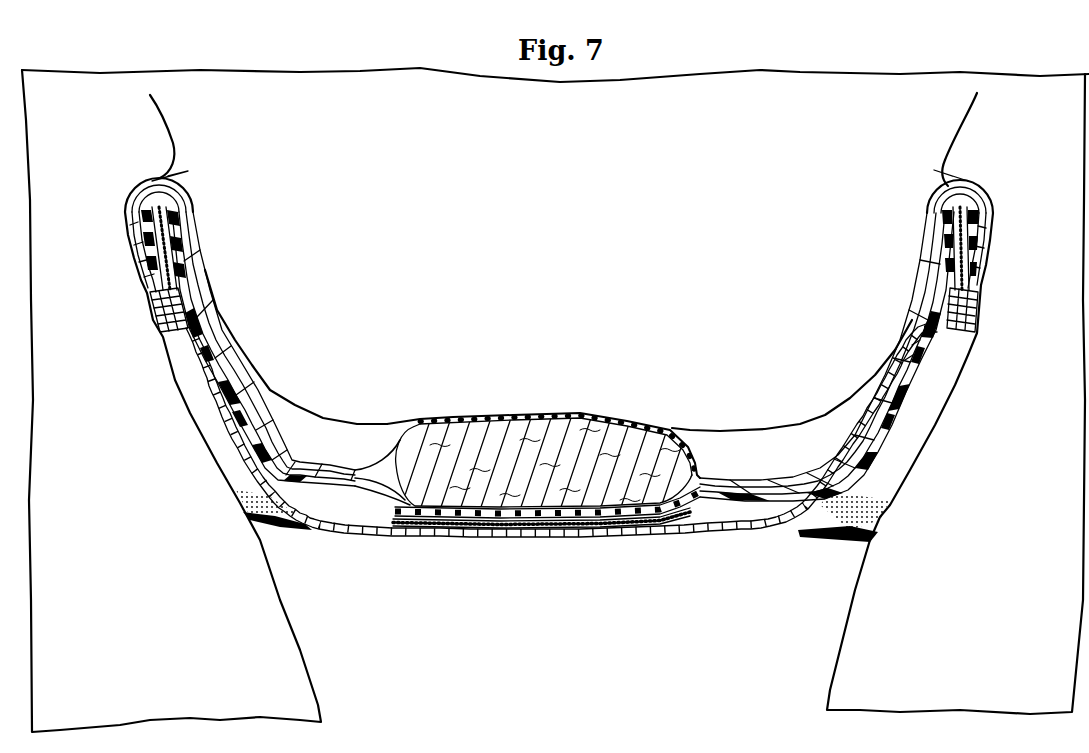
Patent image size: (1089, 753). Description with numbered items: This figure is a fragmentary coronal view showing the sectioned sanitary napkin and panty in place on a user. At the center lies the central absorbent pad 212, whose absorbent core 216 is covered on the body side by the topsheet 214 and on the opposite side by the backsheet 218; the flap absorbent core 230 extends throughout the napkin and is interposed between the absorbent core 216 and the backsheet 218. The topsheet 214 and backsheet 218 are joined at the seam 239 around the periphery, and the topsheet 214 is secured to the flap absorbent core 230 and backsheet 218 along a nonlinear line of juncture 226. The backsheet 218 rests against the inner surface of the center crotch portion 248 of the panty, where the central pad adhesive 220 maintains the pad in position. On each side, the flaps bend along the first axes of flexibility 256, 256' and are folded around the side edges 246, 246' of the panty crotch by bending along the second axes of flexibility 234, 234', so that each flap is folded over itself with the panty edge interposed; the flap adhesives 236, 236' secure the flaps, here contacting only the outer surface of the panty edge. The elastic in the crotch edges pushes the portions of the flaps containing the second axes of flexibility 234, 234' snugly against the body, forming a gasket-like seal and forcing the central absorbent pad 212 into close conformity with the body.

The central absorbent pad 212 is at (532, 406).
The topsheet 214 is at (209, 274).
The absorbent core 216 is at (603, 437).
The backsheet 218 is at (240, 398).
The central pad adhesive 220 is at (657, 530).
The nonlinear line of juncture 226 is at (377, 467).
The flap absorbent core 230 is at (223, 340).
The second axis of flexibility 234 is at (560, 159).
The second axis of flexibility 234' is at (1004, 159).
The flap adhesive 236 is at (124, 244).
The flap adhesive 236' is at (1006, 243).
The seam 239 is at (152, 316).
The side edge 246 is at (526, 430).
The side edge 246' is at (964, 371).
The center crotch portion 248 is at (487, 540).
The first axis of flexibility 256 is at (296, 365).
The first axis of flexibility 256' is at (792, 395).